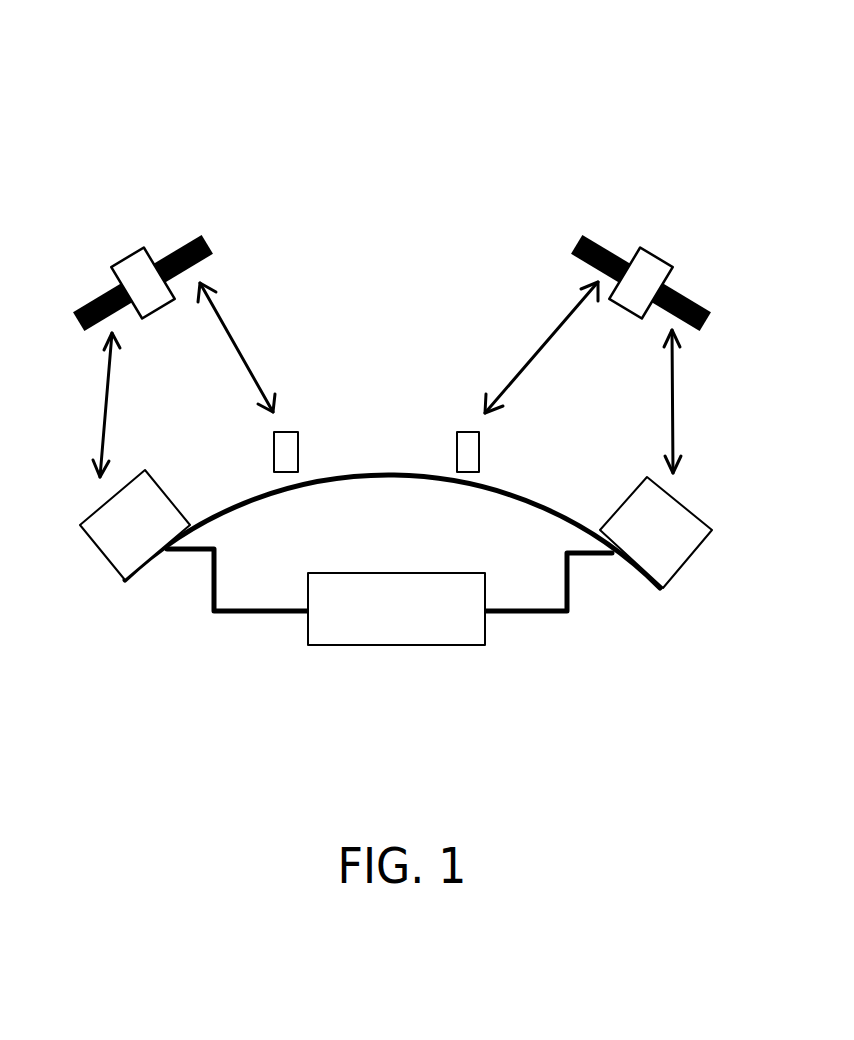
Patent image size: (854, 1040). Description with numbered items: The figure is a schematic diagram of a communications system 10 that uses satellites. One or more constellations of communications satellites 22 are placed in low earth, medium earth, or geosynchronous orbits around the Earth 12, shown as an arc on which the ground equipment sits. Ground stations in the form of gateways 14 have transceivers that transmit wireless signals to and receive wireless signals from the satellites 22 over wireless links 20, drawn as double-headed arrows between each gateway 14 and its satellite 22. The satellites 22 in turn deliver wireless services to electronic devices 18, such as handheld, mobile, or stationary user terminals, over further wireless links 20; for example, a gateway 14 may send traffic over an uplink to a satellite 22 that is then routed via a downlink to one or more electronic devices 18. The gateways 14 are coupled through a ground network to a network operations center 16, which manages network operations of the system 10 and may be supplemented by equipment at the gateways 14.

The communications system 10 is at (344, 106).
The Earth 12 is at (235, 503).
The gateway 14 is at (103, 555).
The network operations center 16 is at (458, 645).
The electronic device 18 is at (287, 472).
The wireless link 20 is at (243, 362).
The communications satellite 22 is at (132, 257).